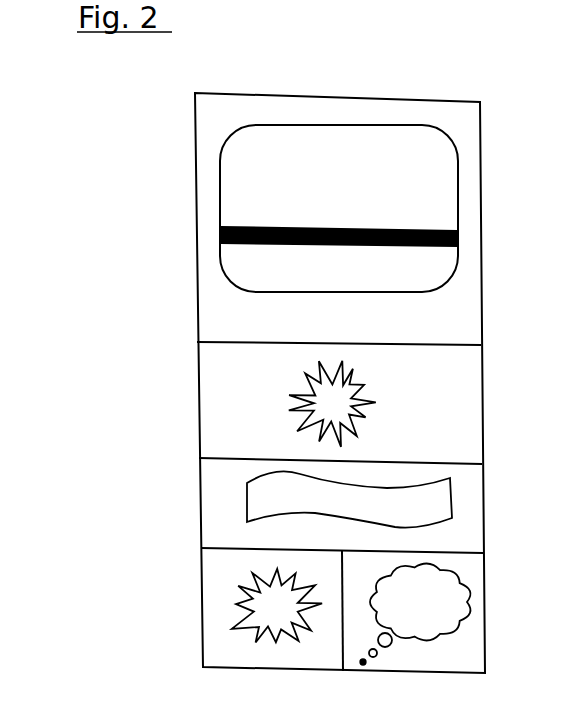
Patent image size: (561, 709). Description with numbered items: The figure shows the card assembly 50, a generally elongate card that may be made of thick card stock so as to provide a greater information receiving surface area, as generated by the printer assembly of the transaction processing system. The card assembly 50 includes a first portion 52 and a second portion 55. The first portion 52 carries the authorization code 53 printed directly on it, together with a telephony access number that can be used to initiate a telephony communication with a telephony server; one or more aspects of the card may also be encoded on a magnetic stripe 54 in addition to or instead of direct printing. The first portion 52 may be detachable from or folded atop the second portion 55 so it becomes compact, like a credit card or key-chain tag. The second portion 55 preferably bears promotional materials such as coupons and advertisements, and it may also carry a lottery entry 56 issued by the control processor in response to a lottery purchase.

The card assembly 50 is at (190, 301).
The first portion 52 is at (369, 129).
The authorization code 53 is at (310, 162).
The magnetic stripe 54 is at (221, 228).
The second portion 55 is at (228, 434).
The lottery entry 56 is at (247, 521).